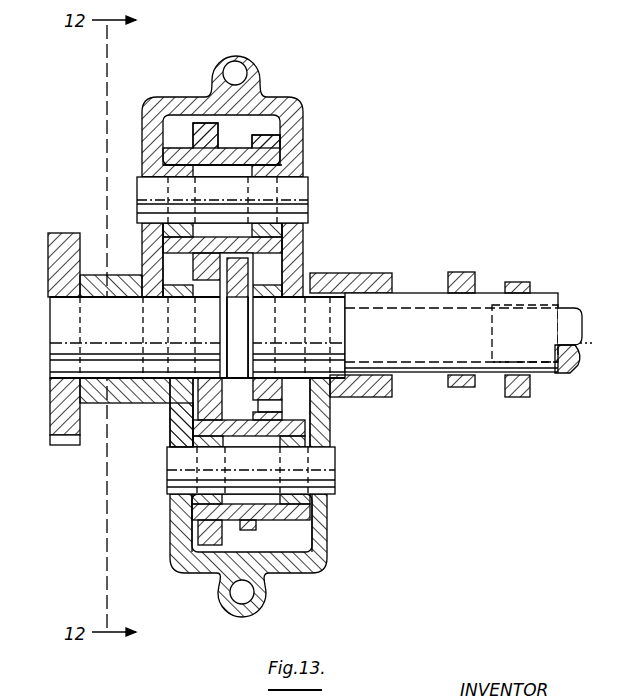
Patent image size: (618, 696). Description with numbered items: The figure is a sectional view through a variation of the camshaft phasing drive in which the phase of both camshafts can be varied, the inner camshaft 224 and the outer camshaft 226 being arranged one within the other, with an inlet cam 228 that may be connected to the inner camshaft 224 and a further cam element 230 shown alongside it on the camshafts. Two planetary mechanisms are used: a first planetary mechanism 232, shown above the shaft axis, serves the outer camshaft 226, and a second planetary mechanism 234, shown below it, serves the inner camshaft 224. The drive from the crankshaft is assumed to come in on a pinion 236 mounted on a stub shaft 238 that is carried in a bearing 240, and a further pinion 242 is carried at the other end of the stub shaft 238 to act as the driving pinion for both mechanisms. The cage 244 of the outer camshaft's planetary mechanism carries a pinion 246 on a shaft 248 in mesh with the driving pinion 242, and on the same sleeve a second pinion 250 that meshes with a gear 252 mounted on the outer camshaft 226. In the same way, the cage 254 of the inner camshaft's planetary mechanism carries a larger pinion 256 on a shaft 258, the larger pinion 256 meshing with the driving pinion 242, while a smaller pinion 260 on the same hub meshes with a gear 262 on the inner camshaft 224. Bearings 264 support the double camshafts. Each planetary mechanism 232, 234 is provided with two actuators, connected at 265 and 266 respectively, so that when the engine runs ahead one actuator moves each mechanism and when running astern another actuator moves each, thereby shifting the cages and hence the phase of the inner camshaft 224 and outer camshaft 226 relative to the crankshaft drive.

The inner camshaft 224 is at (575, 372).
The outer camshaft 226 is at (545, 300).
The inlet cam 228 is at (515, 282).
The ring 230 is at (455, 272).
The planetary mechanism 232 is at (322, 153).
The planetary mechanism 234 is at (350, 520).
The pinion 236 is at (52, 240).
The stub shaft 238 is at (70, 352).
The bearing 240 is at (97, 282).
The pinion 242 is at (178, 408).
The cage 244 is at (300, 122).
The pinion 246 is at (207, 132).
The shaft 248 is at (297, 194).
The second pinion 250 is at (272, 142).
The gear 252 is at (275, 265).
The cage 254 is at (333, 506).
The pinion 256 is at (215, 538).
The shaft 258 is at (328, 467).
The smaller pinion 260 is at (247, 528).
The gear 262 is at (270, 406).
The bearings 264 is at (364, 273).
The actuator connection 265 is at (240, 70).
The actuator connection 266 is at (248, 596).